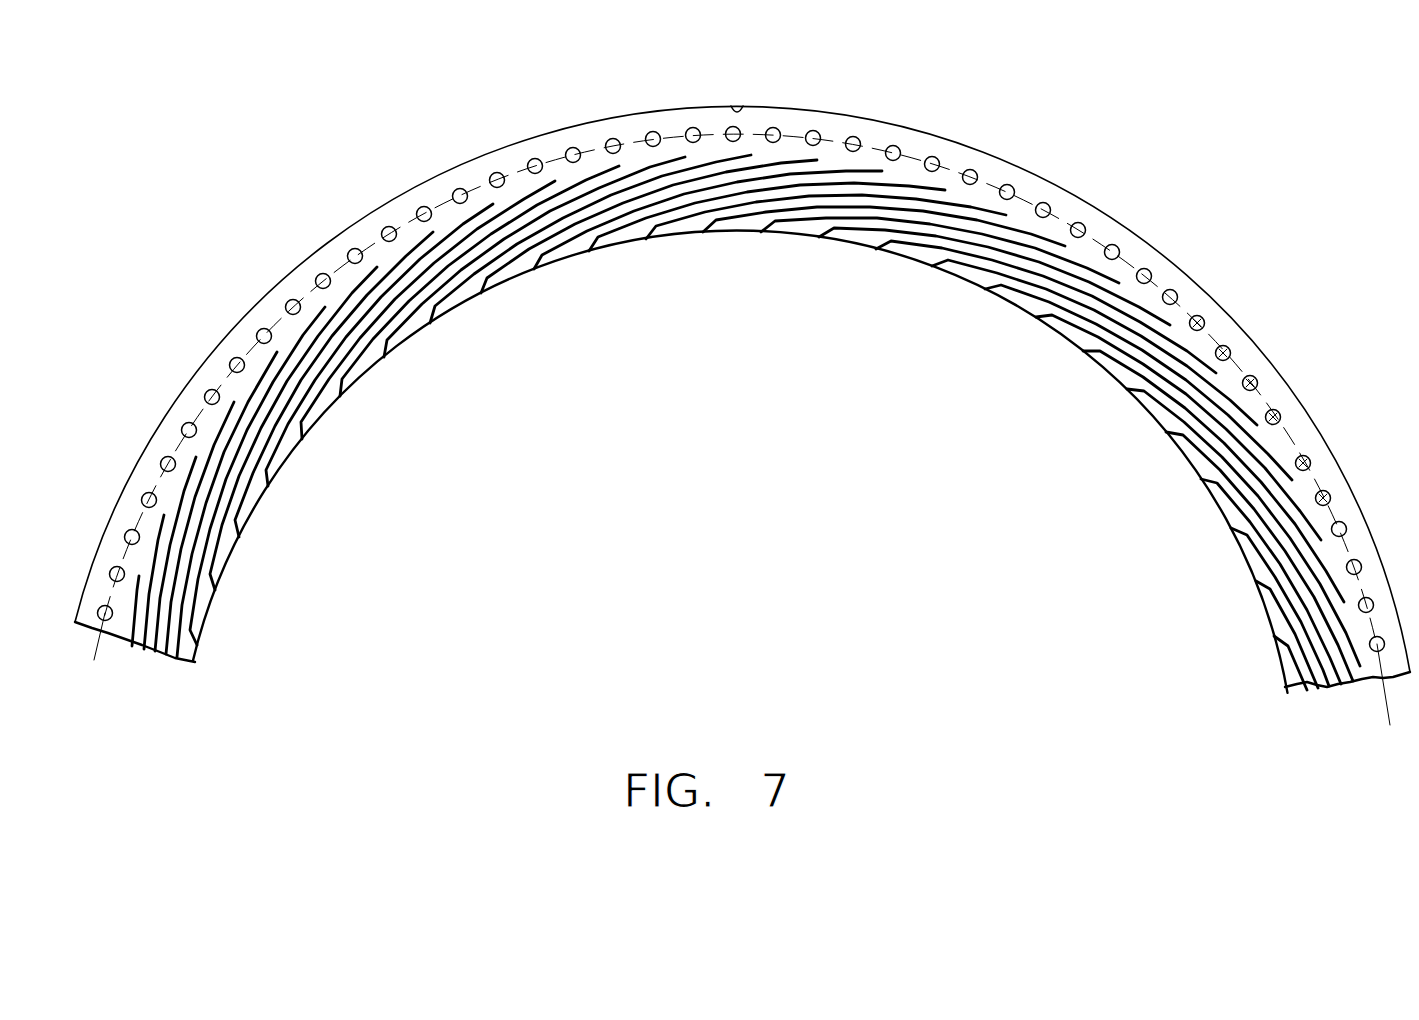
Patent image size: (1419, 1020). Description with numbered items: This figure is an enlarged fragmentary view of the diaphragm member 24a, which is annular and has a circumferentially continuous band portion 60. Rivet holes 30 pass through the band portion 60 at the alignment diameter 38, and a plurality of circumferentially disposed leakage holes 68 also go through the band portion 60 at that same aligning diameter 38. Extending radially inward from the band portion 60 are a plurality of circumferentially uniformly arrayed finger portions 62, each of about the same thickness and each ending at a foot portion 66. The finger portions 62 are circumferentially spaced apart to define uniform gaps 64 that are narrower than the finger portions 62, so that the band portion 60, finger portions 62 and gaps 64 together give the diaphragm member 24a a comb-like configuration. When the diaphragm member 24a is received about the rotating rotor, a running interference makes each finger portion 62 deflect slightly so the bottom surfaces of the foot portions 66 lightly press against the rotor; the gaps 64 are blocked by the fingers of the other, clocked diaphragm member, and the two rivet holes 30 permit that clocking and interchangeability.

The diaphragm member 24a is at (627, 133).
The band portion 60 is at (890, 137).
The alignment diameter 38 is at (388, 237).
The rivet holes 30 is at (1227, 346).
The leakage holes 68 is at (1329, 496).
The foot portion 66 is at (1000, 298).
The finger portions 62 is at (1268, 613).
The gaps 64 is at (157, 652).